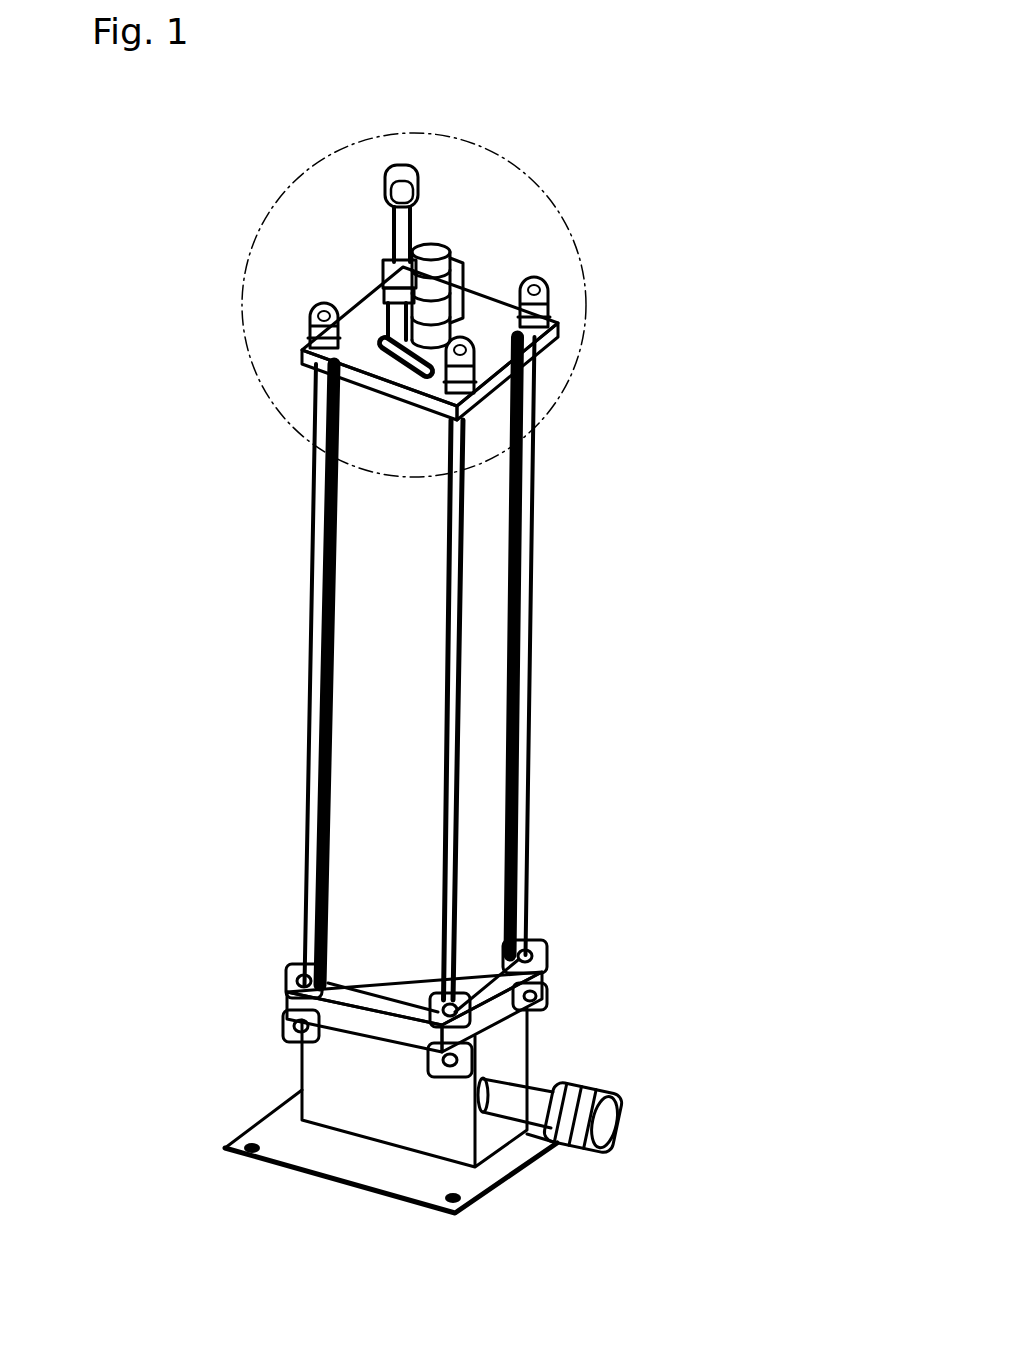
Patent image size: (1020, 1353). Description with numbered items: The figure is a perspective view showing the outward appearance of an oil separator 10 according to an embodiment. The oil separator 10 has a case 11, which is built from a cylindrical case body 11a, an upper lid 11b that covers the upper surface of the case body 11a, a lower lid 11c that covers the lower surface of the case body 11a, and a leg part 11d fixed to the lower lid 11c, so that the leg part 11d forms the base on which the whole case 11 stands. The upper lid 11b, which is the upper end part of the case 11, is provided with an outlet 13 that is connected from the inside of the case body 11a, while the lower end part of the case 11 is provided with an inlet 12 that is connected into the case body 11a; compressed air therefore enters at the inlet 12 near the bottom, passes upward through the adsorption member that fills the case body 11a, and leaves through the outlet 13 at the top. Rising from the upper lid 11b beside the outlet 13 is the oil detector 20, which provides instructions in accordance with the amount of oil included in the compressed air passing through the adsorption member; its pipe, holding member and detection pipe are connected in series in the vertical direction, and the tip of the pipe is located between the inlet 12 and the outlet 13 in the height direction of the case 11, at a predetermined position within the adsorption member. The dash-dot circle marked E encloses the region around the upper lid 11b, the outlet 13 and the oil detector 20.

The oil separator 10 is at (661, 160).
The case 11 is at (670, 380).
The cylindrical case body 11a is at (493, 687).
The upper lid 11b is at (538, 376).
The lower lid 11c is at (545, 972).
The leg part 11d is at (530, 1033).
The inlet 12 is at (628, 1120).
The outlet 13 is at (435, 236).
The oil detector 20 is at (388, 223).
The enlarged region E is at (347, 150).